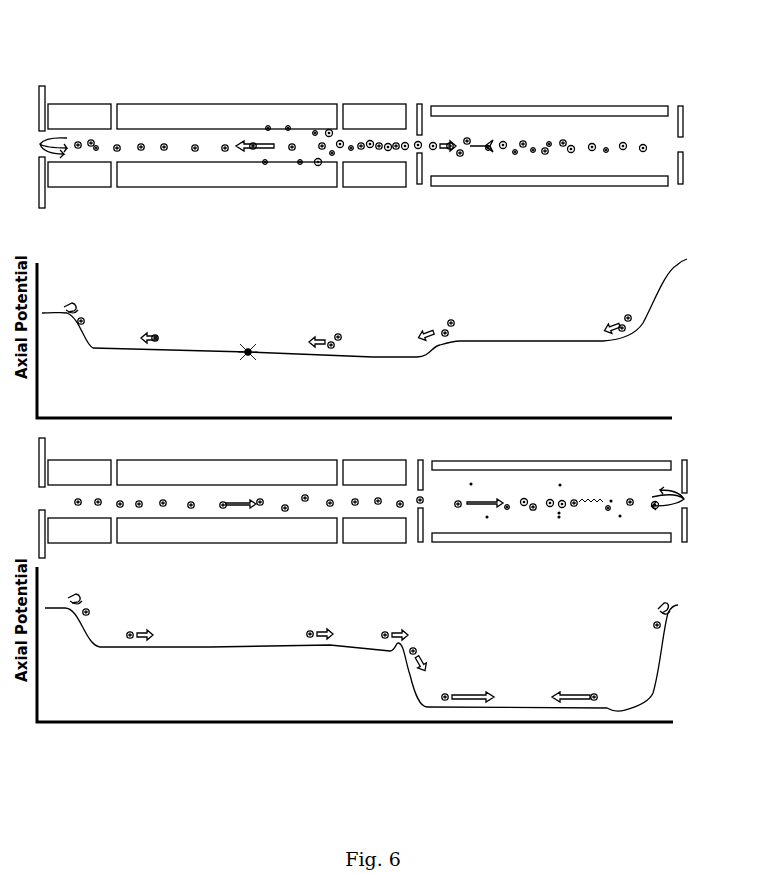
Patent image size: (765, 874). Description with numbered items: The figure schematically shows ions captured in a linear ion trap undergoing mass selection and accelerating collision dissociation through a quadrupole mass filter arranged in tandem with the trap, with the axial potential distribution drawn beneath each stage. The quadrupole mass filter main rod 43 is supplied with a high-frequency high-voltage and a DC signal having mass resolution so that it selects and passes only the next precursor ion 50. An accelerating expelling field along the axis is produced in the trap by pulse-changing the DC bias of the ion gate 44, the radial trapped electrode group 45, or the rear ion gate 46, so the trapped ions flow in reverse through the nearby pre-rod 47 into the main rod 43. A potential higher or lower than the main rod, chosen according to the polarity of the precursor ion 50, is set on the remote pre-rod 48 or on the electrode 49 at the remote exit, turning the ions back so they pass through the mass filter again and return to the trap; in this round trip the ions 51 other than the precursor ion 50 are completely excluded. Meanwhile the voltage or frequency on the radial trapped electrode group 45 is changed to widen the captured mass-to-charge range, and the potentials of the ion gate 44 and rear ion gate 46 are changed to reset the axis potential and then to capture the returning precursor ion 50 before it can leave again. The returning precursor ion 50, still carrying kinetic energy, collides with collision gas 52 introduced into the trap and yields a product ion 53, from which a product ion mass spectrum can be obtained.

The quadrupole mass filter main rod 43 is at (243, 104).
The ion gate 44 is at (421, 104).
The radial trapped electrode group 45 is at (532, 106).
The rear ion gate 46 is at (679, 106).
The pre-rod 47 is at (376, 104).
The pre-rod 48 is at (80, 104).
The electrode 49 is at (40, 86).
The precursor ion 50 is at (460, 157).
The ions 51 is at (571, 153).
The collision gas 52 is at (559, 516).
The product ion 53 is at (608, 511).